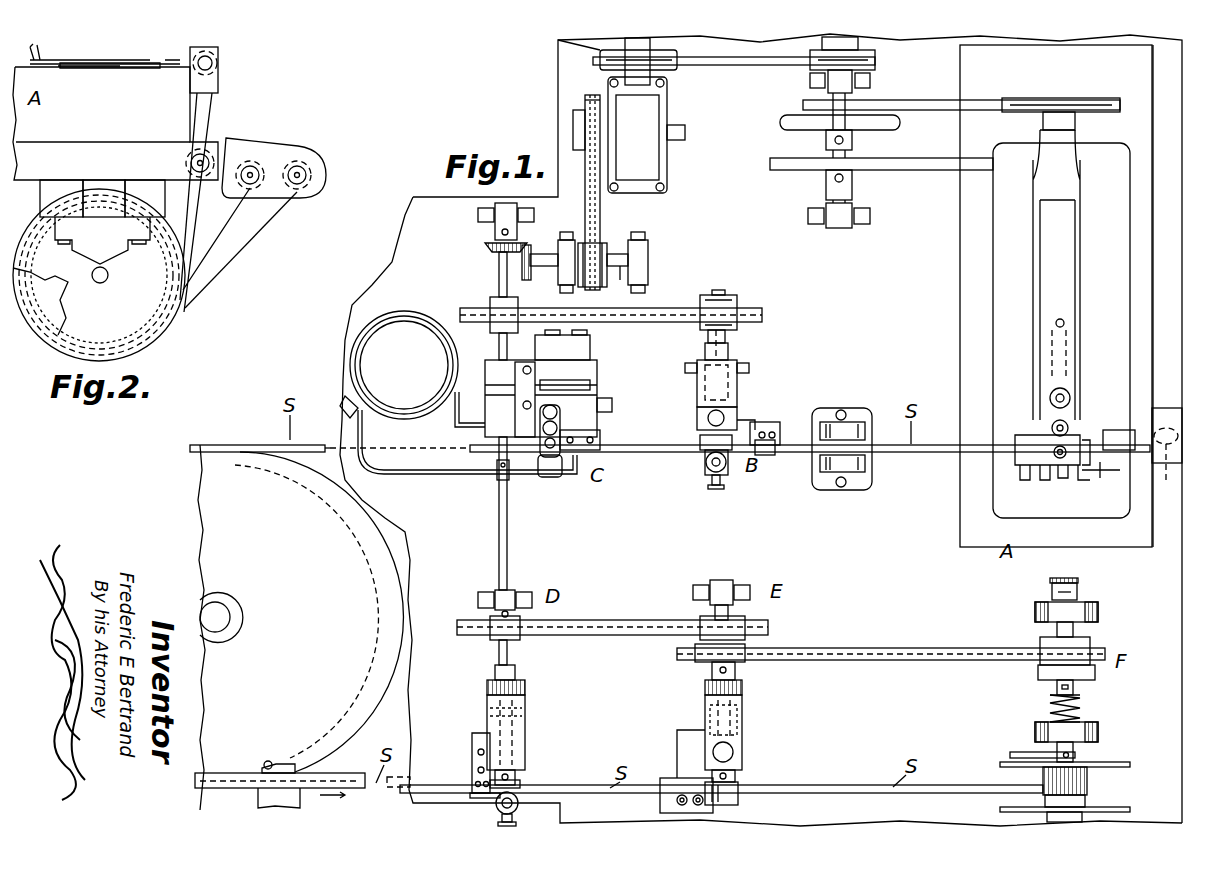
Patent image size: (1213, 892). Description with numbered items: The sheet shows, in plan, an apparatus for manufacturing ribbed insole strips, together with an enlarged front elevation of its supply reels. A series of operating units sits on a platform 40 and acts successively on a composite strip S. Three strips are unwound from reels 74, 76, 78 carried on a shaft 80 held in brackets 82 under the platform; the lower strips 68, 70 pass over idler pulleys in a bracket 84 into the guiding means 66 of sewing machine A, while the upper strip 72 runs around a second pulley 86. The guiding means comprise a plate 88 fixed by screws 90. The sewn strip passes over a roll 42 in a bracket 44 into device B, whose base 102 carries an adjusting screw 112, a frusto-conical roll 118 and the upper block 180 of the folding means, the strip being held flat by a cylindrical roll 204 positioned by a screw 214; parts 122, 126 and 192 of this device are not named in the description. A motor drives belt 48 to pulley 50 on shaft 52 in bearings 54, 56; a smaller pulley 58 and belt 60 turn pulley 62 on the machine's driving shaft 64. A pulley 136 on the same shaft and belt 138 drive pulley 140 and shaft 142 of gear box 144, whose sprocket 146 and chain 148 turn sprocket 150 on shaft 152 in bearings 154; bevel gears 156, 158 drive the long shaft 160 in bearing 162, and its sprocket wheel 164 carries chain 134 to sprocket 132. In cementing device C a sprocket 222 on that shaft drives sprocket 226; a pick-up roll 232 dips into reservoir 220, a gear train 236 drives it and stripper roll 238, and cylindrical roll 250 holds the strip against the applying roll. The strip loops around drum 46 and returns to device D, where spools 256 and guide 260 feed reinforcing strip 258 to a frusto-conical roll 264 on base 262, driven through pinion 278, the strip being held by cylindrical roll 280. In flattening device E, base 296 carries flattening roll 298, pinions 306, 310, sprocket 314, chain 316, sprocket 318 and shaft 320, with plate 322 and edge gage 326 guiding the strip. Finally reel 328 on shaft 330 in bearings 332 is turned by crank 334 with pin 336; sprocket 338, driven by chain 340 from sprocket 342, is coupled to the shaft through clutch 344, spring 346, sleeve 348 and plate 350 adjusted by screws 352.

In FIG. 2, the platform 40 is at (28, 180).
In FIG. 1, the platform 40 is at (410, 197).
In FIG. 1, the roll 42 is at (850, 452).
In FIG. 1, the bracket 44 is at (866, 482).
In FIG. 1, the drum 46 is at (200, 502).
In FIG. 1, the belt 48 is at (940, 170).
In FIG. 1, the pulley 50 is at (790, 150).
In FIG. 1, the shaft 52 is at (852, 188).
In FIG. 1, the bearing 54 is at (850, 220).
In FIG. 1, the bearing 56 is at (852, 80).
In FIG. 1, the smaller pulley 58 is at (862, 102).
In FIG. 1, the belt 60 is at (940, 102).
In FIG. 1, the pulley 62 is at (1060, 98).
In FIG. 1, the driving shaft 64 is at (1076, 125).
In FIG. 2, the guiding means 66 is at (115, 68).
In FIG. 1, the guiding means 66 is at (1097, 465).
In FIG. 2, the lower strip 68 is at (212, 262).
In FIG. 2, the intermediate strip 70 is at (257, 232).
In FIG. 2, the upper strip 72 is at (192, 235).
In FIG. 2, the reel 74 is at (158, 338).
In FIG. 2, the reel 76 is at (58, 325).
In FIG. 2, the reel 78 is at (50, 316).
In FIG. 2, the shaft 80 is at (107, 280).
In FIG. 2, the brackets 82 is at (122, 256).
In FIG. 2, the bracket 84 is at (316, 168).
In FIG. 2, the second pulley 86 is at (220, 58).
In FIG. 1, the second pulley 86 is at (1167, 296).
In FIG. 1, the plate 88 is at (1106, 428).
In FIG. 1, the screws 90 is at (1105, 471).
In FIG. 1, the base 102 is at (730, 395).
In FIG. 1, the adjusting screw 112 is at (722, 415).
In FIG. 1, the frusto-conical roll 118 is at (703, 445).
In FIG. 1, the solenoid housing 122 is at (737, 370).
In FIG. 1, the shaft 126 is at (728, 338).
In FIG. 1, the sprocket 132 is at (750, 308).
In FIG. 1, the chain 134 is at (640, 308).
In FIG. 1, the pulley 136 is at (840, 60).
In FIG. 1, the belt 138 is at (740, 65).
In FIG. 1, the pulley 140 is at (560, 44).
In FIG. 1, the shaft 142 is at (605, 62).
In FIG. 1, the gear box 144 is at (653, 157).
In FIG. 1, the sprocket 146 is at (585, 100).
In FIG. 1, the chain 148 is at (585, 195).
In FIG. 1, the sprocket 150 is at (600, 245).
In FIG. 1, the shaft 152 is at (620, 280).
In FIG. 1, the bearings 154 is at (648, 250).
In FIG. 1, the bevel gear 156 is at (530, 246).
In FIG. 1, the bevel gear 158 is at (487, 244).
In FIG. 1, the driven shaft 160 is at (499, 270).
In FIG. 1, the bearing 162 is at (512, 205).
In FIG. 1, the sprocket wheel 164 is at (488, 306).
In FIG. 1, the upper block 180 is at (772, 422).
In FIG. 1, the contact 192 is at (768, 456).
In FIG. 1, the cylindrical roll 204 is at (719, 475).
In FIG. 1, the screw 214 is at (710, 480).
In FIG. 1, the cement reservoir 220 is at (372, 345).
In FIG. 1, the sprocket 222 is at (490, 388).
In FIG. 1, the sprocket 226 is at (565, 390).
In FIG. 1, the pick-up roll 232 is at (545, 457).
In FIG. 1, the train of gears 236 is at (606, 344).
In FIG. 1, the stripper roll 238 is at (598, 440).
In FIG. 1, the cylindrical roll 250 is at (552, 477).
In FIG. 1, the spools 256 is at (267, 760).
In FIG. 1, the reinforcing strip 258 is at (218, 773).
In FIG. 1, the guide 260 is at (475, 758).
In FIG. 1, the base 262 is at (527, 720).
In FIG. 1, the frusto-conical roll 264 is at (520, 782).
In FIG. 1, the pinion 278 is at (525, 685).
In FIG. 1, the cylindrical roll 280 is at (496, 808).
In FIG. 1, the base 296 is at (742, 702).
In FIG. 1, the flattening roll 298 is at (738, 790).
In FIG. 1, the pinion 306 is at (742, 712).
In FIG. 1, the pinion 310 is at (742, 688).
In FIG. 1, the sprocket 314 is at (770, 628).
In FIG. 1, the chain 316 is at (596, 620).
In FIG. 1, the sprocket 318 is at (478, 618).
In FIG. 1, the shaft 320 is at (725, 580).
In FIG. 1, the horizontal plate 322 is at (662, 808).
In FIG. 1, the edge gage 326 is at (668, 780).
In FIG. 1, the reel 328 is at (1100, 807).
In FIG. 1, the shaft 330 is at (1075, 750).
In FIG. 1, the bearings 332 is at (1035, 612).
In FIG. 1, the crank 334 is at (1010, 753).
In FIG. 1, the pin 336 is at (1022, 762).
In FIG. 1, the sprocket 338 is at (1090, 652).
In FIG. 1, the chain 340 is at (862, 648).
In FIG. 1, the sprocket 342 is at (695, 652).
In FIG. 1, the friction clutch 344 is at (1057, 686).
In FIG. 1, the compression spring 346 is at (1082, 708).
In FIG. 1, the bushing 348 is at (1073, 630).
In FIG. 1, the vertical plate 350 is at (1078, 592).
In FIG. 1, the screws 352 is at (1064, 578).